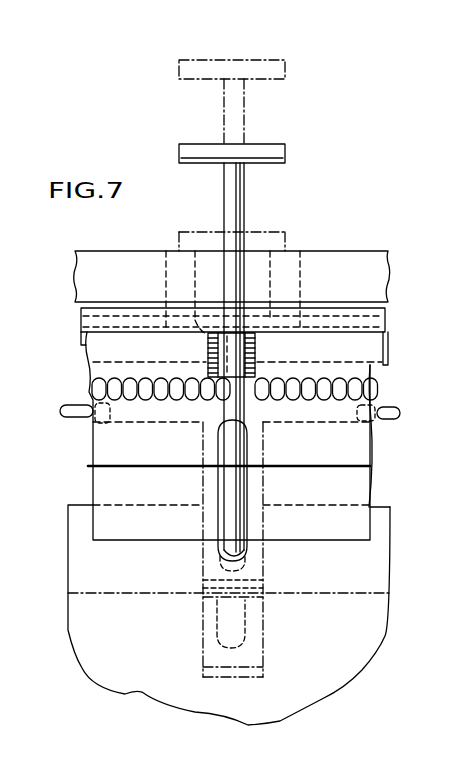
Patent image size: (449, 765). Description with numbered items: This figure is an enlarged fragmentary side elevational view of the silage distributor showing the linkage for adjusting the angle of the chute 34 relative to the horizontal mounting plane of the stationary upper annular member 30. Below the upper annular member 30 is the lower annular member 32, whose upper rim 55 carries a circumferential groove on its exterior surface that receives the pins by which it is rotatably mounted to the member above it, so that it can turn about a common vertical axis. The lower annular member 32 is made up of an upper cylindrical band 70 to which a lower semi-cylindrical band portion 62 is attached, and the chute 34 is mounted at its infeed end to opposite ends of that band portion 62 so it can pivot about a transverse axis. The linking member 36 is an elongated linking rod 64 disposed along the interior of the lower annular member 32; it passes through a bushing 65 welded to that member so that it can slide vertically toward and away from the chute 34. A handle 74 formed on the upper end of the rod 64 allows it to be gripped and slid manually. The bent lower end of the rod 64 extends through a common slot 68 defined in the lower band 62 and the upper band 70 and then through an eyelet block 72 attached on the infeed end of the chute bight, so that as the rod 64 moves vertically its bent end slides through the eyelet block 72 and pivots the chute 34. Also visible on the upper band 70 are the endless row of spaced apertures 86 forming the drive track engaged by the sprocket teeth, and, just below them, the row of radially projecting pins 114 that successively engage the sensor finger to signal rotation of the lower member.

The upper annular member 30 is at (360, 248).
The lower annular member 32 is at (371, 485).
The chute 34 is at (377, 655).
The linking member 36 is at (272, 197).
The upper rim 55 is at (389, 350).
The semi-cylindrical band portion 62 is at (344, 541).
The linking rod 64 is at (222, 204).
The bushing 65 is at (256, 353).
The slot 68 is at (223, 474).
The upper cylindrical band 70 is at (366, 434).
The eyelet block 72 is at (262, 566).
The handle 74 is at (286, 152).
The apertures 86 is at (200, 402).
The pins 114 is at (75, 405).